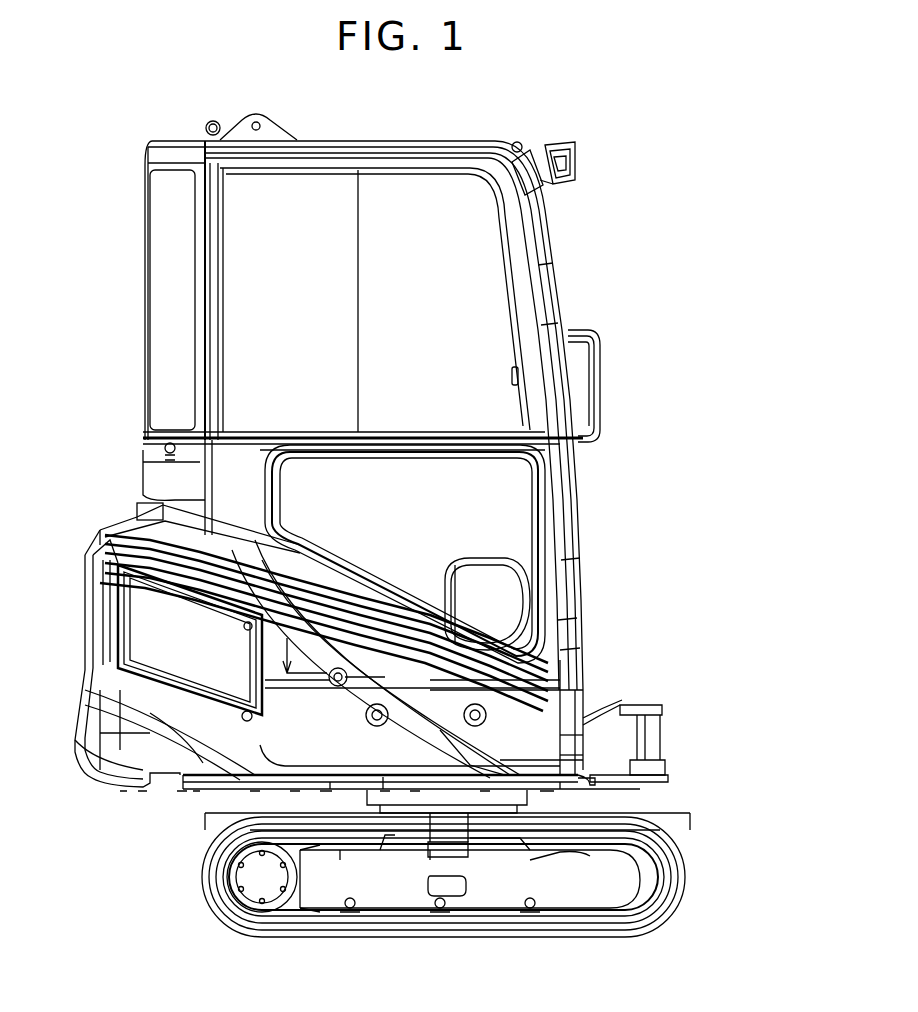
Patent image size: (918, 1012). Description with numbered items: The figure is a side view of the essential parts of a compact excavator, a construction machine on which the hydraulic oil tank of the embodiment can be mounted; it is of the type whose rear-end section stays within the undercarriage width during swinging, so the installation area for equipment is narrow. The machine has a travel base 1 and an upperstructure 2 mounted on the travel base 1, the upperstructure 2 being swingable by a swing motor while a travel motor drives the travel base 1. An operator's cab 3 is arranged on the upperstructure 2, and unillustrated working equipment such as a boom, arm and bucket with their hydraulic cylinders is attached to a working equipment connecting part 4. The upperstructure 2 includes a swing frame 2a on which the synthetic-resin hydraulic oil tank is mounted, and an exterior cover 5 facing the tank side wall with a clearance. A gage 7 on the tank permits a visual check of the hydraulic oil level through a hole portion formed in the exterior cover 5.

The travel base 1 is at (442, 942).
The upperstructure 2 is at (123, 518).
The swing frame 2a is at (210, 800).
The operator's cab 3 is at (562, 300).
The working equipment connecting part 4 is at (661, 745).
The exterior cover 5 is at (270, 732).
The gage 7 is at (270, 680).